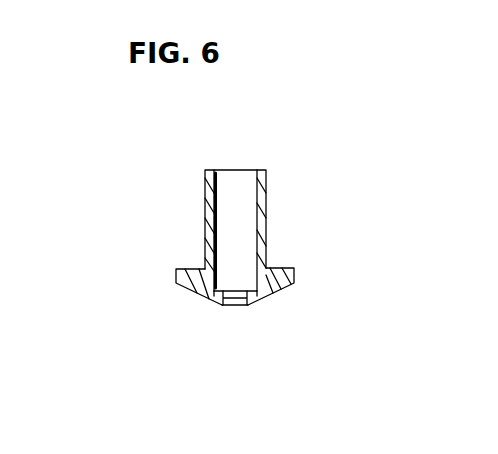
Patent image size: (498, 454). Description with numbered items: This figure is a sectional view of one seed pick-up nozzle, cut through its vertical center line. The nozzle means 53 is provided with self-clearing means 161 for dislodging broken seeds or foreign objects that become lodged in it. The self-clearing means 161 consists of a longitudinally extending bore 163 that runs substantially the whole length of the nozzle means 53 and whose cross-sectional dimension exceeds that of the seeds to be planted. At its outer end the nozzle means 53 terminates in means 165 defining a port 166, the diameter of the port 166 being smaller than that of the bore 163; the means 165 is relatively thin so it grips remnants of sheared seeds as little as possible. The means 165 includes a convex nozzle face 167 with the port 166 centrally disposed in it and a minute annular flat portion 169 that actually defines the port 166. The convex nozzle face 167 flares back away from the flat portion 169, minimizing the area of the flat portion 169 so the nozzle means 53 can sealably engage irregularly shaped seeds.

The nozzle means 53 is at (358, 170).
The self-clearing means 161 is at (213, 348).
The longitudinally extending bore 163 is at (256, 228).
The means defining a port 165 is at (217, 298).
The port 166 is at (232, 304).
The convex nozzle face 167 is at (200, 299).
The annular flat portion 169 is at (250, 306).